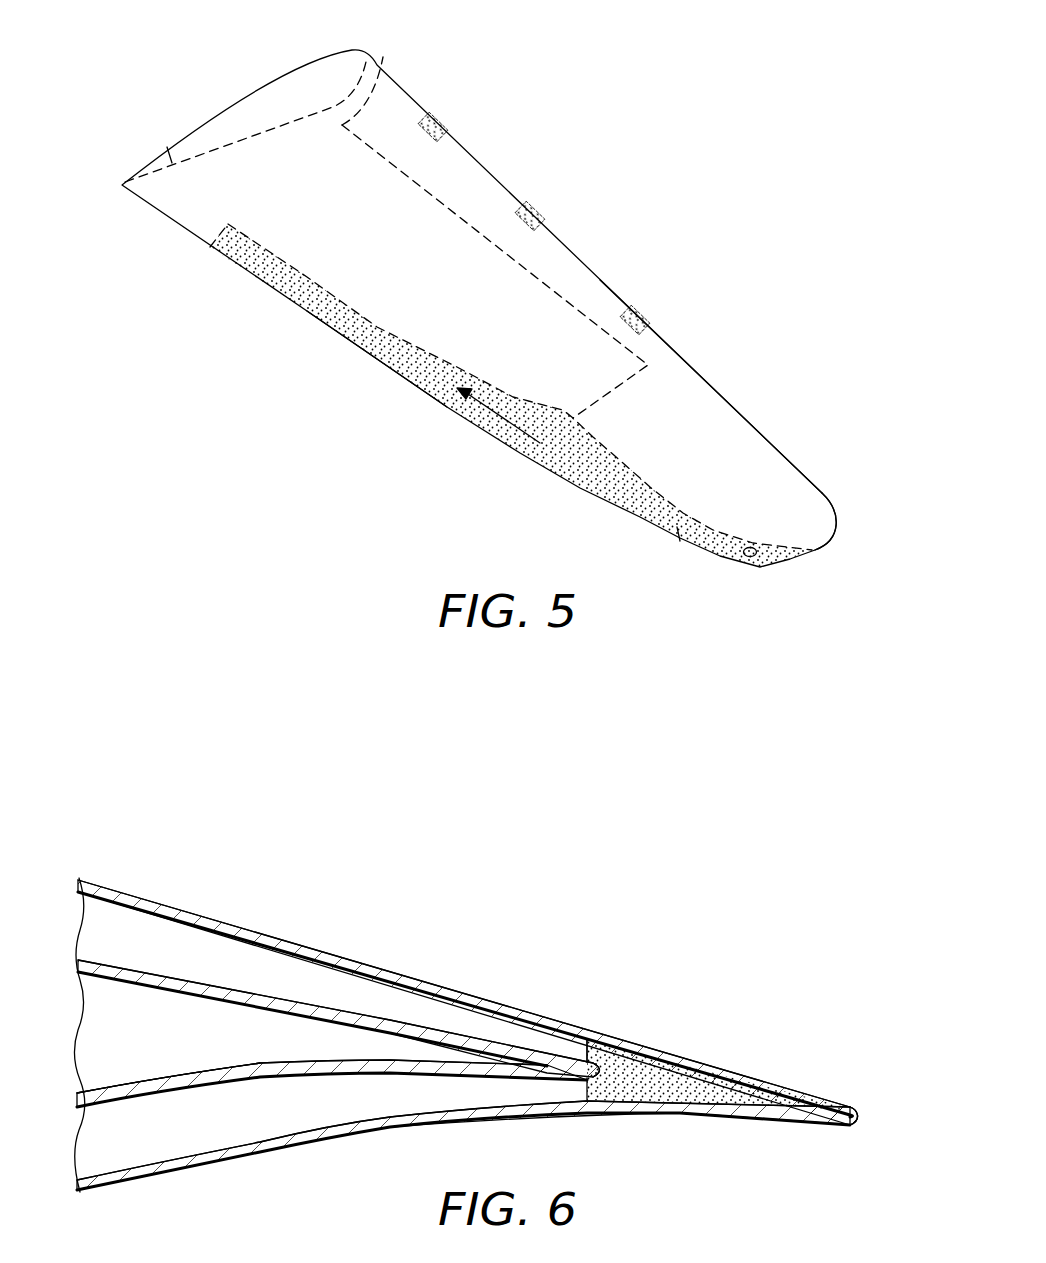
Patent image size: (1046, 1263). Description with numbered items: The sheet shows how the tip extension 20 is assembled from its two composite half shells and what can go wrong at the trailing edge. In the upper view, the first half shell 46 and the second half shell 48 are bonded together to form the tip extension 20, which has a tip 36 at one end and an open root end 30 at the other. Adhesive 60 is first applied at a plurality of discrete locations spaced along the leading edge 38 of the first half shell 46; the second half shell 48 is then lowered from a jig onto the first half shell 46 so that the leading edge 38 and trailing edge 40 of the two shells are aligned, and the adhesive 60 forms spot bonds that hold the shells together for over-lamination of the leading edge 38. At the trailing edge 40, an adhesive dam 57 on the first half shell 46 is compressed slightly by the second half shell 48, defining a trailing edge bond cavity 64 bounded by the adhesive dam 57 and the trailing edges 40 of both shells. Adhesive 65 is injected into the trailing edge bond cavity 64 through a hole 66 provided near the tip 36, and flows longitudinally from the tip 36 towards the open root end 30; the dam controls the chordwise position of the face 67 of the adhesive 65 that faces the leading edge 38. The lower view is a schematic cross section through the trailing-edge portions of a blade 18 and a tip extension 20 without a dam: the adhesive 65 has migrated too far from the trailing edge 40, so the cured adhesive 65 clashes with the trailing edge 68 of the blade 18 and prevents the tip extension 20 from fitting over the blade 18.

In FIG. 6, the blade 18 is at (225, 1078).
In FIG. 5, the tip extension 20 is at (660, 152).
In FIG. 6, the tip extension 20 is at (675, 962).
In FIG. 5, the open root end 30 is at (262, 88).
In FIG. 5, the tip 36 is at (833, 533).
In FIG. 5, the leading edge 38 is at (753, 420).
In FIG. 5, the trailing edge 40 is at (317, 312).
In FIG. 6, the trailing edge 40 is at (863, 1118).
In FIG. 5, the first half shell 46 is at (163, 147).
In FIG. 5, the second half shell 48 is at (318, 53).
In FIG. 5, the adhesive dam 57 is at (678, 547).
In FIG. 5, the adhesive 60 is at (440, 110).
In FIG. 5, the trailing edge bond cavity 64 is at (380, 343).
In FIG. 5, the adhesive 65 is at (560, 460).
In FIG. 6, the adhesive 65 is at (732, 1090).
In FIG. 5, the hole 66 is at (750, 557).
In FIG. 5, the face of the adhesive 67 is at (280, 253).
In FIG. 6, the face of the adhesive 67 is at (582, 1043).
In FIG. 6, the trailing edge of the blade 68 is at (608, 1077).